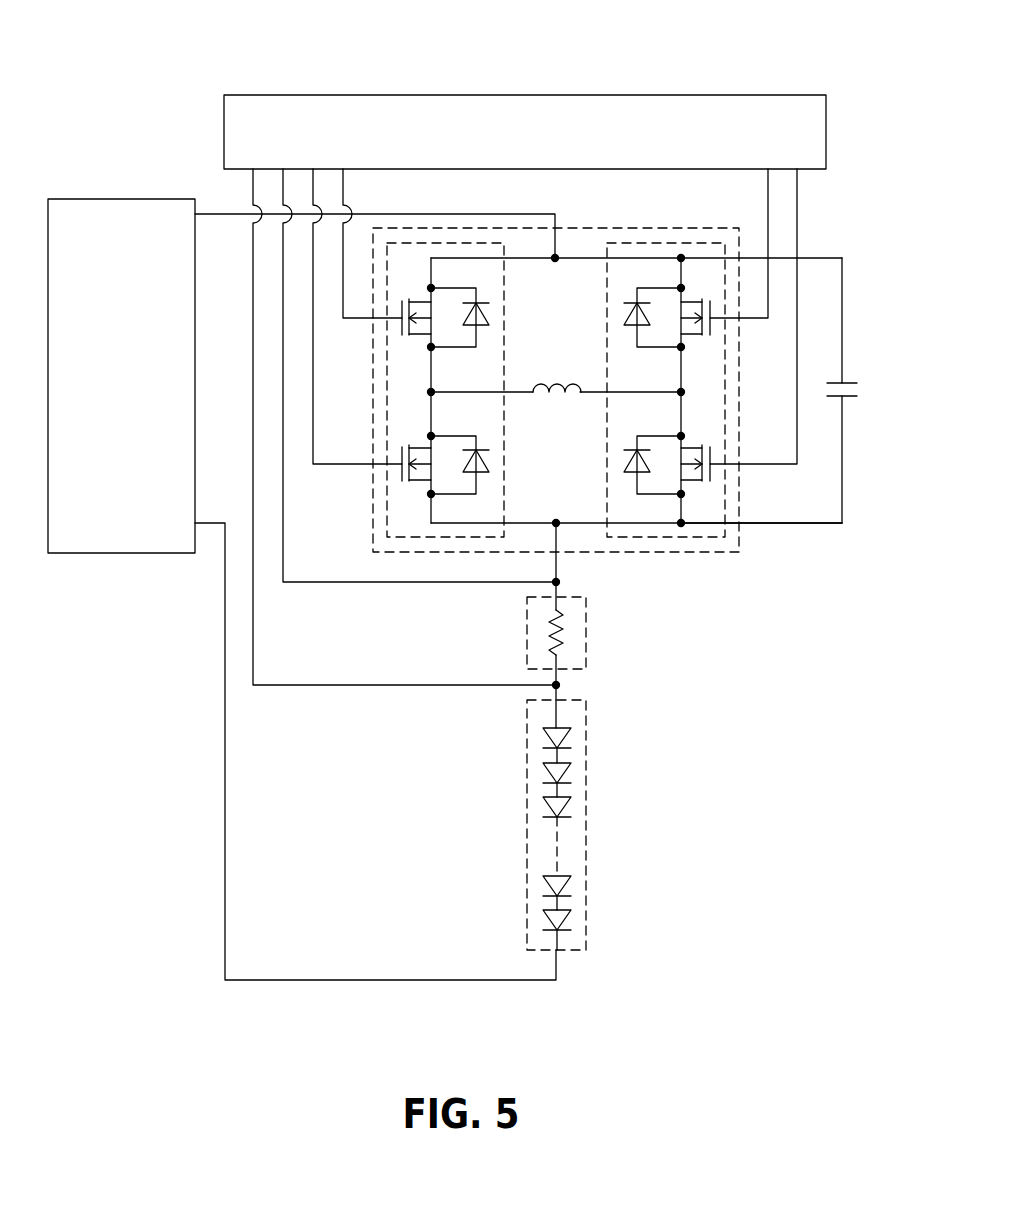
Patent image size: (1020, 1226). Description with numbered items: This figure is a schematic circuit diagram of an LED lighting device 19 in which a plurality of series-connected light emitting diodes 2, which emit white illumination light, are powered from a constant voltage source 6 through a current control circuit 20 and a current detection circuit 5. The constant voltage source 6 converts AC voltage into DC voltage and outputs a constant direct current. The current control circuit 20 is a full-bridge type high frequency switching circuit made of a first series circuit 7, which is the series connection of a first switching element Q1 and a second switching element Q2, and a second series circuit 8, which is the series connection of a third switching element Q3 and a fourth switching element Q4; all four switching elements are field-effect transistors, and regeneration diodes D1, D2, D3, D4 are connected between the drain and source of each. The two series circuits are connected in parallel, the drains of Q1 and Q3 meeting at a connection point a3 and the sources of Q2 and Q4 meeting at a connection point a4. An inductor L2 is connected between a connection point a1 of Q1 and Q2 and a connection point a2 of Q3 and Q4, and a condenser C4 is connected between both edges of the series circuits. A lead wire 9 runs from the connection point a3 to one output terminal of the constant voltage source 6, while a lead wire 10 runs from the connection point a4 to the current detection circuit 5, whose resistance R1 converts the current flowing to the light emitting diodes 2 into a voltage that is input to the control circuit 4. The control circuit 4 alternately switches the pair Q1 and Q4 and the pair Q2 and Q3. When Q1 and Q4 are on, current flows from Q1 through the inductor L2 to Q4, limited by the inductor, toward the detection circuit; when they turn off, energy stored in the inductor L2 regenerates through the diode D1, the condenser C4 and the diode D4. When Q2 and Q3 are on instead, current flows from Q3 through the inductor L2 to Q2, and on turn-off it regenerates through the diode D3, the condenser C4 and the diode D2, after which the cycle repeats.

The LED lighting device 19 is at (667, 52).
The control circuit 4 is at (556, 94).
The constant voltage source 6 is at (119, 198).
The lead wire 9 is at (450, 228).
The first series circuit 7 is at (400, 243).
The second series circuit 8 is at (700, 242).
The current control circuit 20 is at (740, 545).
The connection point a1 is at (431, 393).
The connection point a2 is at (688, 394).
The connection point a3 is at (556, 257).
The connection point a4 is at (560, 528).
The first switching element Q1 is at (421, 335).
The second switching element Q2 is at (421, 483).
The third switching element Q3 is at (690, 335).
The fourth switching element Q4 is at (690, 483).
The diode D1 is at (489, 314).
The diode D2 is at (489, 464).
The diode D3 is at (624, 316).
The diode D4 is at (624, 466).
The inductor L2 is at (549, 380).
The condenser C4 is at (858, 398).
The lead wire 10 is at (558, 562).
The current detection circuit 5 is at (552, 648).
The resistance R1 is at (551, 632).
The light emitting diode 2 is at (587, 848).